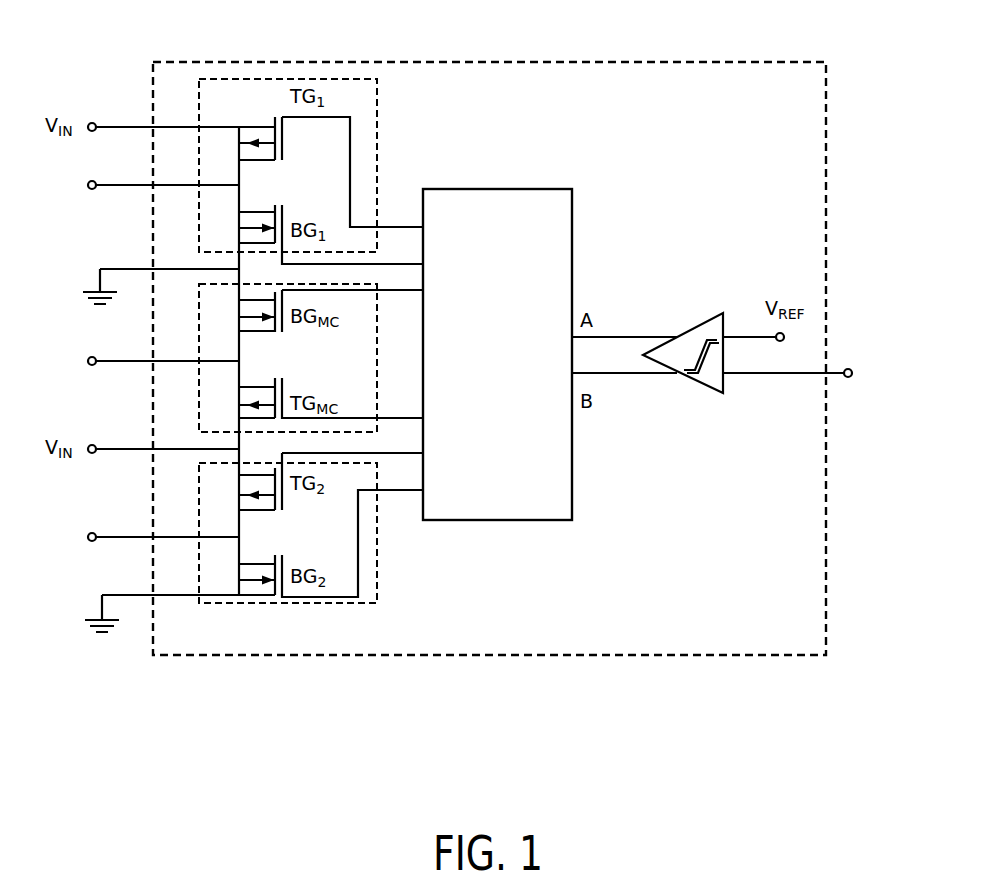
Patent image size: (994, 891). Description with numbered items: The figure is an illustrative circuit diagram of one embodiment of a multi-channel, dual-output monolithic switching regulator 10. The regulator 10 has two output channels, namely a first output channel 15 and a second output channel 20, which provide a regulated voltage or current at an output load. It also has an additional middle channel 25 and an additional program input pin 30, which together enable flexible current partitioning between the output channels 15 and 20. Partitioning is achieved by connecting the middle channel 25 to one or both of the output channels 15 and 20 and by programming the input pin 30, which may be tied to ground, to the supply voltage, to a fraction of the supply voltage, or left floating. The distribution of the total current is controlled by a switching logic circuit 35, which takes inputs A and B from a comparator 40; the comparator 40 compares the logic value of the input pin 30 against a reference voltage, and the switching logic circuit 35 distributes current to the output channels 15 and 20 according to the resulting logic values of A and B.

The multi-channel monolithic switching regulator 10 is at (238, 60).
The output channel Ch1 15 is at (193, 186).
The output channel Ch2 20 is at (200, 536).
The middle channel 25 is at (192, 362).
The PROG input pin 30 is at (834, 376).
The switching logic circuit 35 is at (523, 189).
The comparator 40 is at (700, 325).